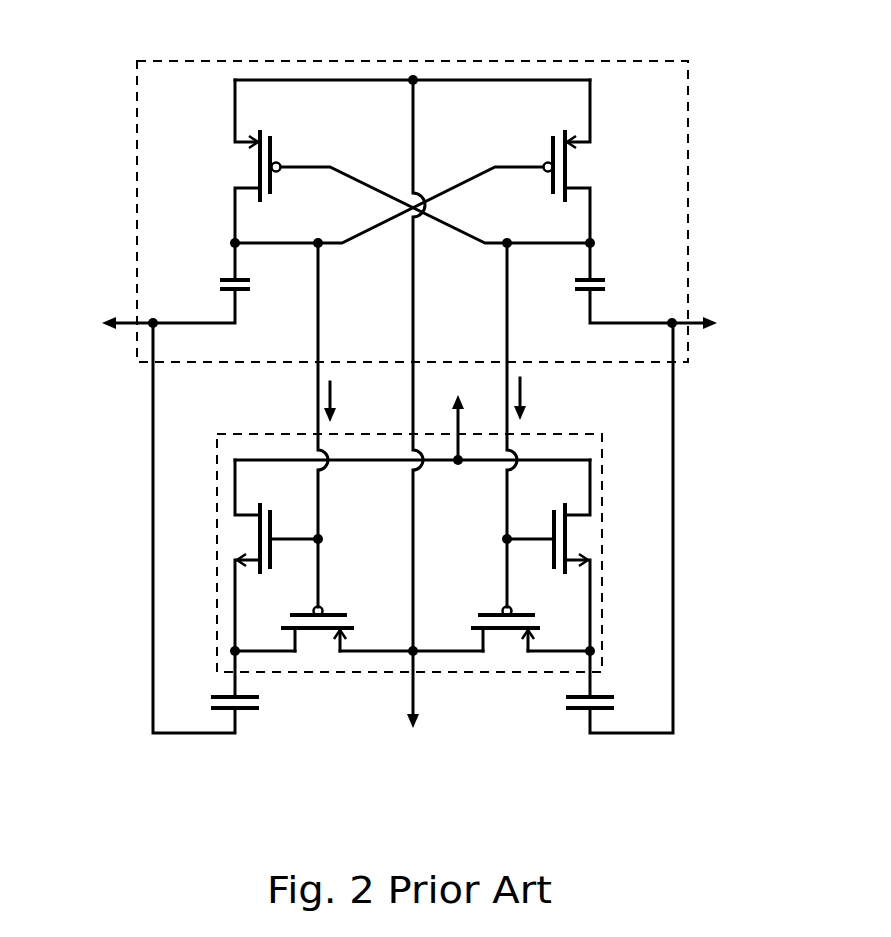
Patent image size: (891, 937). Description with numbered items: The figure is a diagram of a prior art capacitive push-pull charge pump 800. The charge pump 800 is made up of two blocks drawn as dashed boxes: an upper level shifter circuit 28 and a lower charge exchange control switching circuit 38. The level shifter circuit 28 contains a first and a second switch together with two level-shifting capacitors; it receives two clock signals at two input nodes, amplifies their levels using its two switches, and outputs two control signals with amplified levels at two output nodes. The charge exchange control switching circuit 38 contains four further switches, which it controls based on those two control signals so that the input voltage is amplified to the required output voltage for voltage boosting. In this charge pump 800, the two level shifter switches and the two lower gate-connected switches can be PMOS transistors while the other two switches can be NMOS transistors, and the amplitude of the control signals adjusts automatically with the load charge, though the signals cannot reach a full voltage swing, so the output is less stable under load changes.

The capacitive push-pull charge pump 800 is at (740, 105).
The level shifter circuit 28 is at (688, 236).
The charge exchange control switching circuit 38 is at (602, 572).